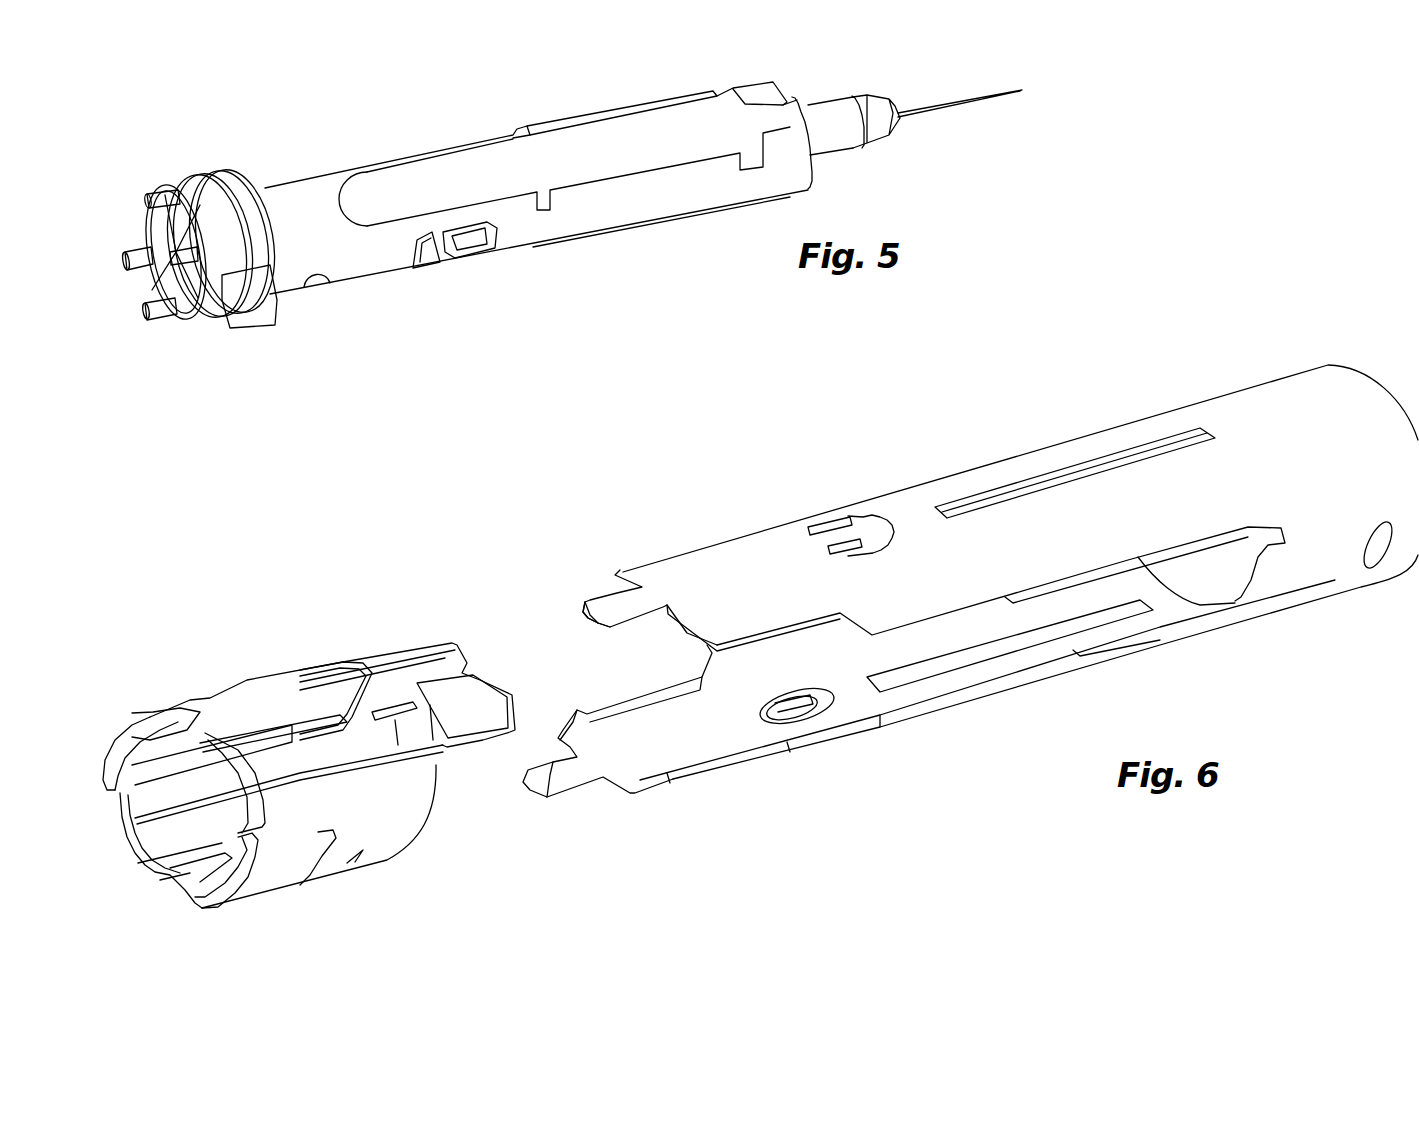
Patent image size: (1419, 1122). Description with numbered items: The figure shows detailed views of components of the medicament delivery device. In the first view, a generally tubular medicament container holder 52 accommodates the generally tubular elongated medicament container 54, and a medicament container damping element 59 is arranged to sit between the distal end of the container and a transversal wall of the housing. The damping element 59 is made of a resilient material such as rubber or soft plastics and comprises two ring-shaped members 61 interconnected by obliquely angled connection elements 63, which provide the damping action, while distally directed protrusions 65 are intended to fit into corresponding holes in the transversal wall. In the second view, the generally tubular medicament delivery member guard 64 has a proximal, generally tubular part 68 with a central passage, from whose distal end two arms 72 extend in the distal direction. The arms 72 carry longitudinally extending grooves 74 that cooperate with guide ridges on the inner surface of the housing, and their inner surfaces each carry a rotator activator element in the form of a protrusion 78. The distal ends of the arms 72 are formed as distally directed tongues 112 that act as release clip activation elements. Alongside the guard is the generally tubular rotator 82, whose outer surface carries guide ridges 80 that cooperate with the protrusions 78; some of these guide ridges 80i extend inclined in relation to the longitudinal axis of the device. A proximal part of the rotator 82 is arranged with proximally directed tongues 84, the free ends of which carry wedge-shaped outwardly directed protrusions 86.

In FIG. 5, the medicament container damping element 59 is at (224, 138).
In FIG. 5, the medicament container holder 52 is at (615, 217).
In FIG. 5, the medicament container 54 is at (571, 172).
In FIG. 5, the connection elements 63 is at (190, 195).
In FIG. 5, the ring-shaped members 61 is at (197, 316).
In FIG. 5, the distally directed protrusions 65 is at (150, 307).
In FIG. 6, the medicament delivery member guard 64 is at (1010, 393).
In FIG. 6, the tubular part 68 is at (1334, 476).
In FIG. 6, the arms 72 is at (773, 599).
In FIG. 6, the grooves 74 is at (1000, 495).
In FIG. 6, the protrusion 78 is at (790, 707).
In FIG. 6, the tongues 112 is at (617, 600).
In FIG. 6, the rotator 82 is at (190, 652).
In FIG. 6, the ridges 80 is at (312, 730).
In FIG. 6, the inclined guide ridges 80i is at (368, 687).
In FIG. 6, the tongues 84 is at (418, 727).
In FIG. 6, the protrusions 86 is at (453, 712).